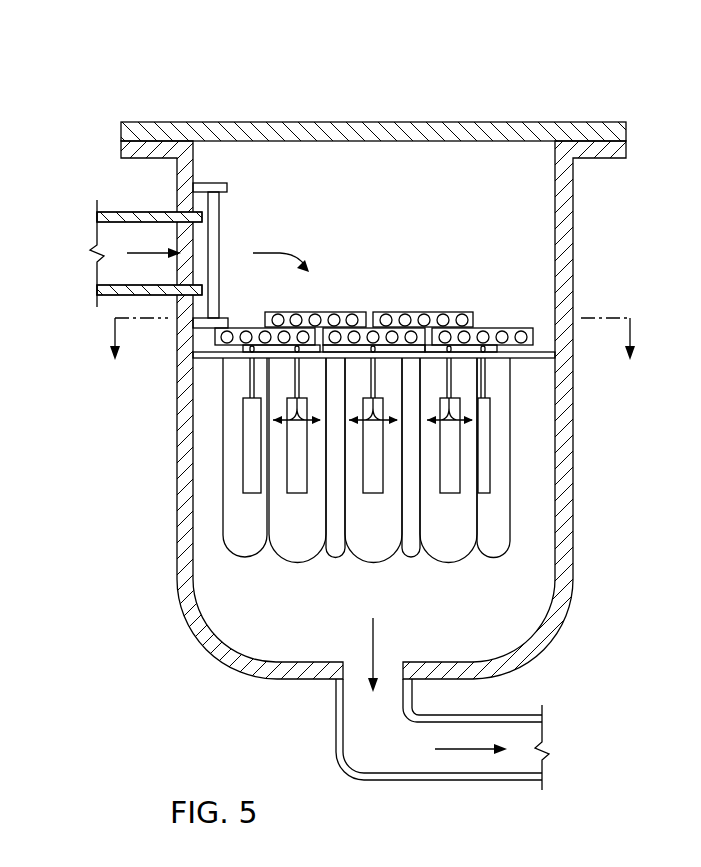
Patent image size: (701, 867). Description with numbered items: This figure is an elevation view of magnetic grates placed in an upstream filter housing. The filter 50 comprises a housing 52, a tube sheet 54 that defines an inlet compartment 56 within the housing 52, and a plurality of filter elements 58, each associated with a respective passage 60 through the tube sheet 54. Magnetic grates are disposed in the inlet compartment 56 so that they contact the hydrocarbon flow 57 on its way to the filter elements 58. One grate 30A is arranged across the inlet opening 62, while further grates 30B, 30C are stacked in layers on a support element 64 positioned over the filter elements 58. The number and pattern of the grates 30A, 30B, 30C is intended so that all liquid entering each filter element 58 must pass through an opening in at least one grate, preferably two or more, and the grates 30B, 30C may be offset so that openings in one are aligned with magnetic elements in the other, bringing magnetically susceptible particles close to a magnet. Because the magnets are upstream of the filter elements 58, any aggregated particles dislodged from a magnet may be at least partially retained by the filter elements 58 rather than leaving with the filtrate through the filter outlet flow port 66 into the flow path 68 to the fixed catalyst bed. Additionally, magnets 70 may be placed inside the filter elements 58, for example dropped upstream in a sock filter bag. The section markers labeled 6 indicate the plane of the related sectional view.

The filter 50 is at (172, 92).
The housing 52 is at (575, 214).
The tube sheet 54 is at (532, 358).
The inlet compartment 56 is at (388, 158).
The hydrocarbon flow 57 is at (280, 253).
The filter elements 58 is at (298, 562).
The passages 60 is at (252, 375).
The inlet opening 62 is at (185, 237).
The support element 64 is at (238, 352).
The filter outlet flow port 66 is at (388, 680).
The flow path 68 is at (453, 733).
The magnets 70 is at (460, 480).
The grate 30A is at (222, 207).
The grate 30B is at (311, 312).
The grate 30C is at (507, 327).
The section line 6- 6 is at (373, 357).